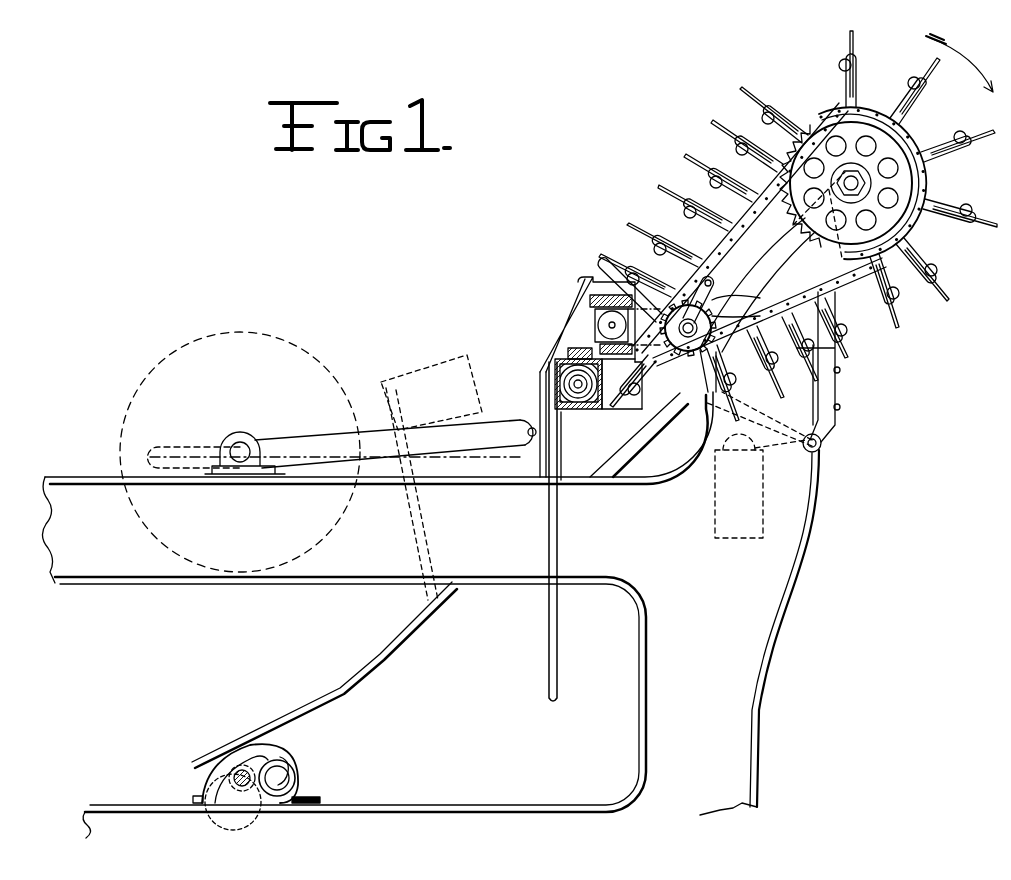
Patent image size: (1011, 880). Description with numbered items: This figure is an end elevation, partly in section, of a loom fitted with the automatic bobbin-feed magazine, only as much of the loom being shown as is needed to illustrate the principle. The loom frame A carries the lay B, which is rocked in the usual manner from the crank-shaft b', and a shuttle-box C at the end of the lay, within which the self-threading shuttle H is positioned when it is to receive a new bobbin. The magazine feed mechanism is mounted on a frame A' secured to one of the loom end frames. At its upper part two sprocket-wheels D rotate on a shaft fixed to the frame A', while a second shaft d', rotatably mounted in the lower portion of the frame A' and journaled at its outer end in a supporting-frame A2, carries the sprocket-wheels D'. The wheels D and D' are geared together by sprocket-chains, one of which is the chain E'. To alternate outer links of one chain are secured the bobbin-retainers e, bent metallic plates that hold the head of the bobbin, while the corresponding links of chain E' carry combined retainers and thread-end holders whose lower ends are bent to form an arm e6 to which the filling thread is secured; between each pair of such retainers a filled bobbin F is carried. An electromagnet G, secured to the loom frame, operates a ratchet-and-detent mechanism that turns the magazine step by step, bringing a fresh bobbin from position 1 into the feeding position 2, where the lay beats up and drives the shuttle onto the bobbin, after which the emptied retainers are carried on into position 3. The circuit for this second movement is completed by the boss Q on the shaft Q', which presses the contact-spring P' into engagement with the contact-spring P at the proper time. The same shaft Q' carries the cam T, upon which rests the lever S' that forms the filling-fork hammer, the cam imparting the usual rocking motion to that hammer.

The loom frame A is at (441, 565).
The magazine frame A' is at (740, 228).
The supporting-frame A2 is at (707, 287).
The lay B is at (592, 414).
The crank-shaft b' is at (331, 466).
The shuttle-box C is at (578, 285).
The sprocket-wheel D is at (886, 146).
The sprocket-wheel D' is at (688, 347).
The shaft d' is at (730, 343).
The sprocket-chain E' is at (776, 312).
The bobbin-retainer e is at (912, 272).
The thread-end holder arm e6 is at (897, 292).
The filled bobbin F is at (608, 328).
The electromagnet G is at (708, 537).
The self-threading shuttle H is at (590, 300).
The position 1 is at (634, 412).
The position 2 is at (600, 322).
The position 3 is at (602, 262).
The contact-spring P is at (299, 772).
The contact-spring P' is at (283, 787).
The boss Q is at (228, 773).
The shaft Q' is at (225, 773).
The lever S' is at (324, 675).
The cam T is at (284, 762).